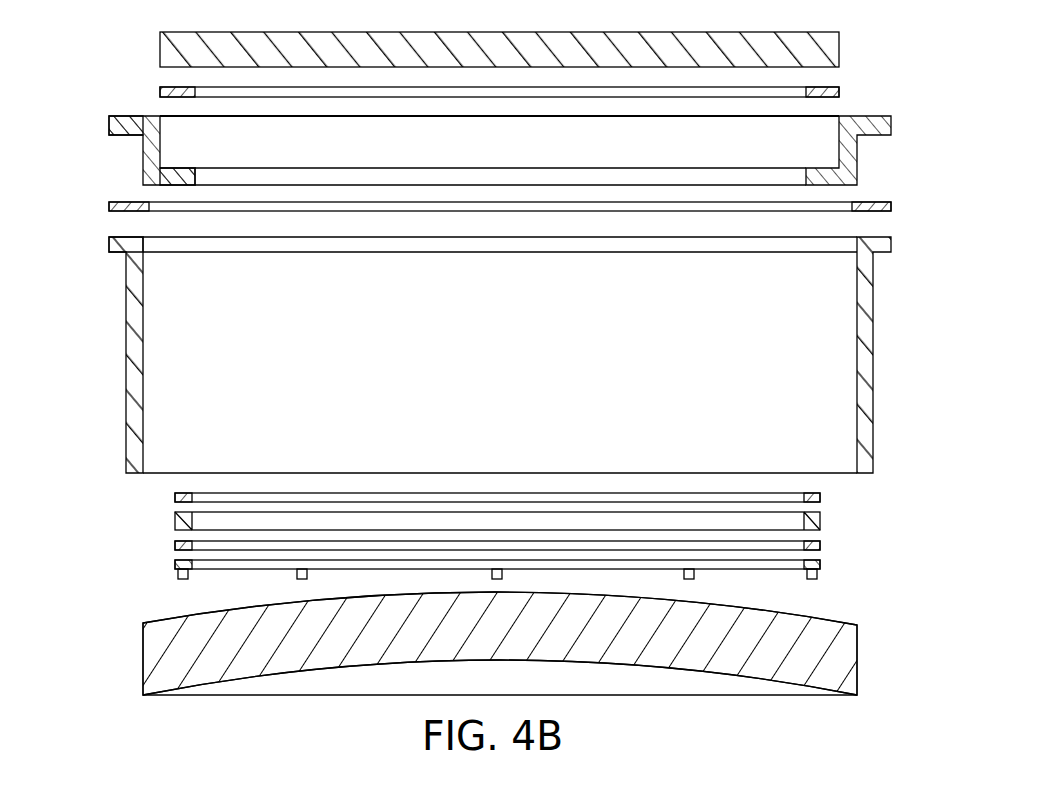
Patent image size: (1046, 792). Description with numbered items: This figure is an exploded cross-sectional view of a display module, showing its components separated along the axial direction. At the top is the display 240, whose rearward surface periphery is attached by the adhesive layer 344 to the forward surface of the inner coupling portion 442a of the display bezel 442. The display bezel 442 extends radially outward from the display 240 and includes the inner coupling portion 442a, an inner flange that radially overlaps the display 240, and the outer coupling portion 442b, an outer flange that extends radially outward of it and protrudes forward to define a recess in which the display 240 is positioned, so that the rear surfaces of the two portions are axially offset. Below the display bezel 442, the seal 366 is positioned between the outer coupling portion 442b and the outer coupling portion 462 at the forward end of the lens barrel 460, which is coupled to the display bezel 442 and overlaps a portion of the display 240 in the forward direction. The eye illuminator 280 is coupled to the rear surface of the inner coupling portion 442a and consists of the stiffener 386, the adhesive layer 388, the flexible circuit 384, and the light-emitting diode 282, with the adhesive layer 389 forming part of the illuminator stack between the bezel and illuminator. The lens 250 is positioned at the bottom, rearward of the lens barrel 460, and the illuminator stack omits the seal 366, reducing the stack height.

The display 240 is at (839, 42).
The adhesive layer 344 is at (839, 91).
The display bezel 442 is at (891, 130).
The inner coupling portion 442a is at (178, 167).
The outer coupling portion 442b is at (114, 122).
The seal 366 is at (891, 206).
The lens barrel 460 is at (865, 360).
The outer coupling portion 462 is at (110, 238).
The eye illuminator 280 is at (568, 521).
The adhesive layer 389 is at (820, 496).
The stiffener 386 is at (820, 516).
The adhesive layer 388 is at (820, 544).
The flexible circuit 384 is at (820, 563).
The light-emitting diode 282 is at (817, 577).
The lens 250 is at (820, 662).